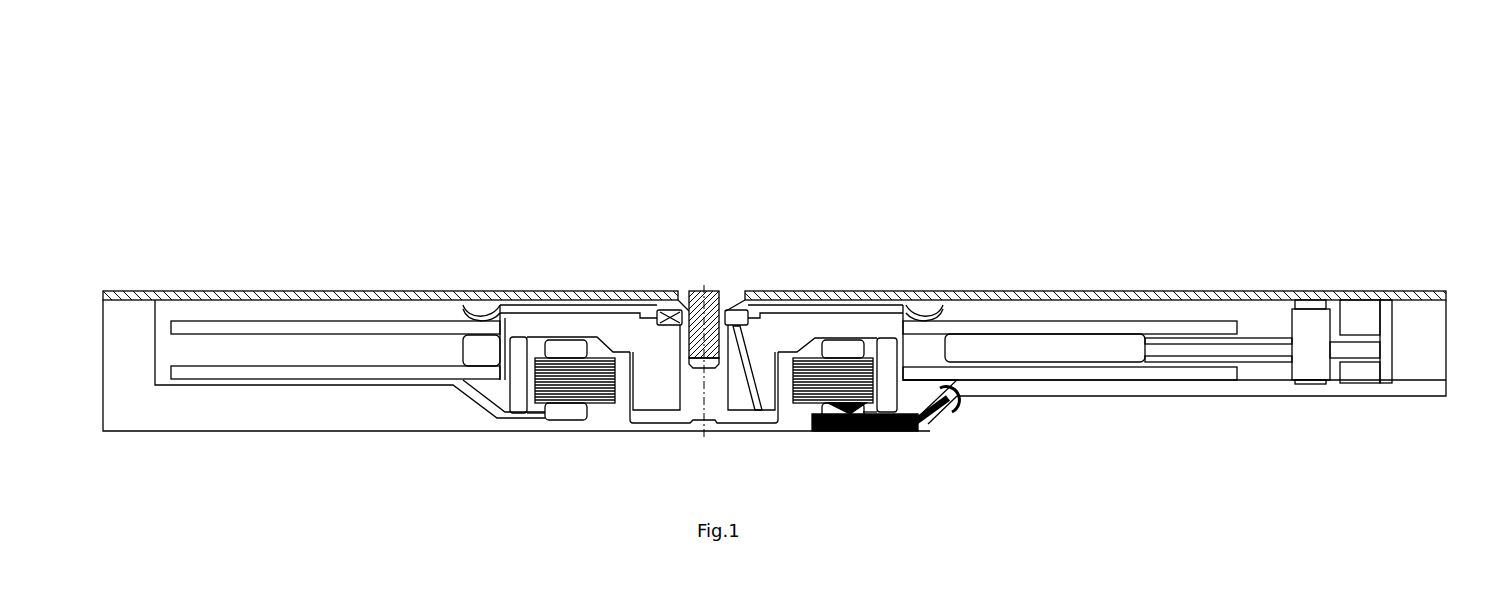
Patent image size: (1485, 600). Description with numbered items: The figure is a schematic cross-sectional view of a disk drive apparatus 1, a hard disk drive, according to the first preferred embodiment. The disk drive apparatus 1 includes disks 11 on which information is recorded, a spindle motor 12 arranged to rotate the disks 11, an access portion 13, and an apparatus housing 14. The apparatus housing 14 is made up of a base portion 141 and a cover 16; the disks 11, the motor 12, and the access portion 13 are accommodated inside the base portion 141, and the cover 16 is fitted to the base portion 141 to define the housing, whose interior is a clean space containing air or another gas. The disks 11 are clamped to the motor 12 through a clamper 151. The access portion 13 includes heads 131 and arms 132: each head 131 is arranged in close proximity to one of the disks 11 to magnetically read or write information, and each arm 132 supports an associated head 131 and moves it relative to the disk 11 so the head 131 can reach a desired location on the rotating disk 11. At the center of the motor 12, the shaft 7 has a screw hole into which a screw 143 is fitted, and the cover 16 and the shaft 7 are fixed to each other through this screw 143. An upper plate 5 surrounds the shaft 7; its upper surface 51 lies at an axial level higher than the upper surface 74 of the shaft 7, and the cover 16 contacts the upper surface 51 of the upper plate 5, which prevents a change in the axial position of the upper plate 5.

The disk drive apparatus 1 is at (432, 160).
The disks 11 is at (370, 372).
The spindle motor 12 is at (619, 282).
The upper plate 5 is at (667, 309).
The upper surface of the upper plate 51 is at (678, 310).
The screw 143 is at (710, 310).
The upper surface of the shaft 74 is at (733, 303).
The clamper 151 is at (862, 312).
The shaft 7 is at (692, 390).
The access portion 13 is at (1165, 450).
The heads 131 is at (1178, 340).
The arms 132 is at (1263, 340).
The apparatus housing 14 is at (1210, 222).
The cover 16 is at (1217, 295).
The base portion 141 is at (1418, 352).